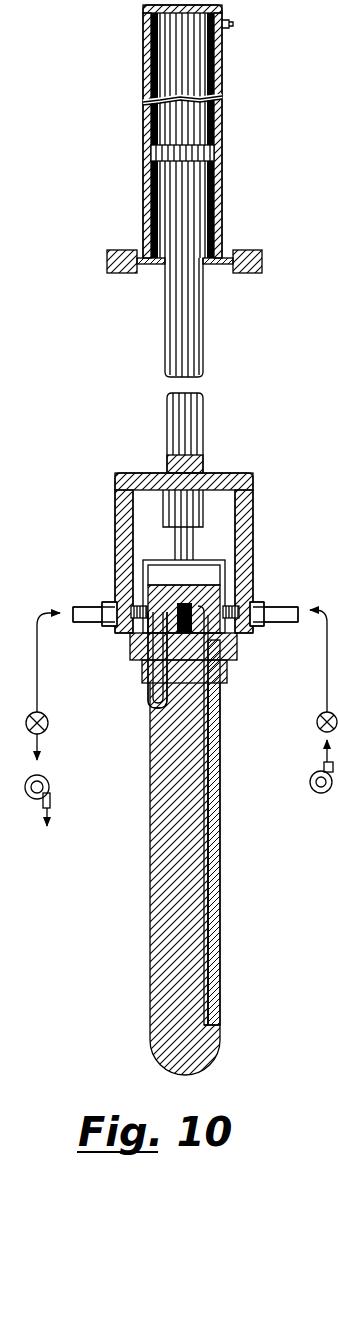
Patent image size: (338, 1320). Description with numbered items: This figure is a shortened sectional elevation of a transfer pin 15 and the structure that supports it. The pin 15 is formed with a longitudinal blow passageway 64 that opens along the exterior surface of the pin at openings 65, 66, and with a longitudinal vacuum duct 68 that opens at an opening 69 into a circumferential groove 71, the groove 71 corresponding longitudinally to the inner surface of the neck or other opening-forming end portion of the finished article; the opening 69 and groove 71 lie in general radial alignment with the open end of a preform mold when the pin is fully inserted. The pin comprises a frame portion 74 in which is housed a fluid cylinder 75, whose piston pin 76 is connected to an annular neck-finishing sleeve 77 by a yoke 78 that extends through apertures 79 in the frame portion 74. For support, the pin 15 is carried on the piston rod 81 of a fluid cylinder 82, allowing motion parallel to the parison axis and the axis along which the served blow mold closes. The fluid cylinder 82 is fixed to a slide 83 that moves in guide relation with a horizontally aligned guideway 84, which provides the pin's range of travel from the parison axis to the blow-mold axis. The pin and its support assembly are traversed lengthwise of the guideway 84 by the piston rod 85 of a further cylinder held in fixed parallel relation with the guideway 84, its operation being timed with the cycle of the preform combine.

The transfer pin 15 is at (246, 668).
The longitudinal blow passageway 64 is at (209, 790).
The blow passageway opening 65 is at (216, 1025).
The blow passageway opening 66 is at (219, 735).
The longitudinal vacuum duct 68 is at (147, 698).
The vacuum duct opening 69 is at (152, 712).
The circumferential groove 71 is at (214, 707).
The frame portion 74 is at (252, 525).
The fluid cylinder 75 is at (228, 482).
The piston pin 76 is at (204, 538).
The annular neck-finishing sleeve 77 is at (131, 648).
The yoke 78 is at (160, 562).
The apertures 79 is at (135, 590).
The piston rod 81 is at (204, 422).
The fluid cylinder 82 is at (224, 180).
The slide 83 is at (150, 266).
The guideway 84 is at (107, 262).
The piston rod 85 is at (262, 262).